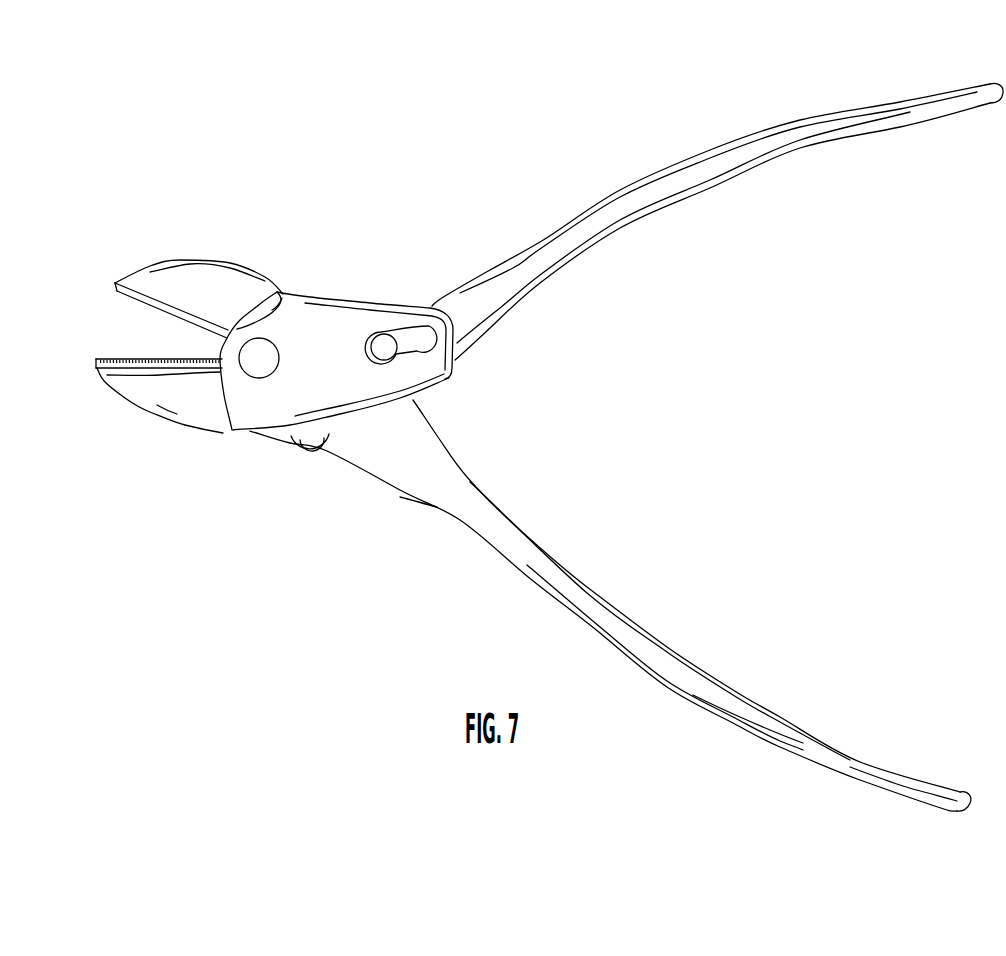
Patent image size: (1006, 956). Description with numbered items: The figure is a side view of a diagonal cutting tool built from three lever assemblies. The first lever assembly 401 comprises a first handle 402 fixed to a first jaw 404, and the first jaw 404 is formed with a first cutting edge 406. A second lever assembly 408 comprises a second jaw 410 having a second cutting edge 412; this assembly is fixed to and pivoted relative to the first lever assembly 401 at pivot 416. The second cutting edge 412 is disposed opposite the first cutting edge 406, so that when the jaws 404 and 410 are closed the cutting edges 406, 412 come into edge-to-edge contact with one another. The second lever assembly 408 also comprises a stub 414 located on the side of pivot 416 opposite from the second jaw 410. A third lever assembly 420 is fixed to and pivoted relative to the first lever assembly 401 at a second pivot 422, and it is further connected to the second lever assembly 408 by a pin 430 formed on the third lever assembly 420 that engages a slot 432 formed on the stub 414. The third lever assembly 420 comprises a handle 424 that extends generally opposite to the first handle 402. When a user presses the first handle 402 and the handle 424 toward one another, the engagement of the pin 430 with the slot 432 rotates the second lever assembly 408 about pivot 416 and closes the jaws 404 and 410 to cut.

The first lever assembly 401 is at (670, 647).
The first handle 402 is at (675, 685).
The first jaw 404 is at (197, 272).
The first cutting edge 406 is at (130, 299).
The second lever assembly 408 is at (232, 438).
The second jaw 410 is at (174, 413).
The second cutting edge 412 is at (110, 358).
The stub 414 is at (333, 307).
The pivot 416 is at (259, 372).
The third lever assembly 420 is at (677, 200).
The second pivot 422 is at (313, 435).
The handle 424 is at (765, 134).
The pin 430 is at (383, 356).
The slot 432 is at (420, 327).